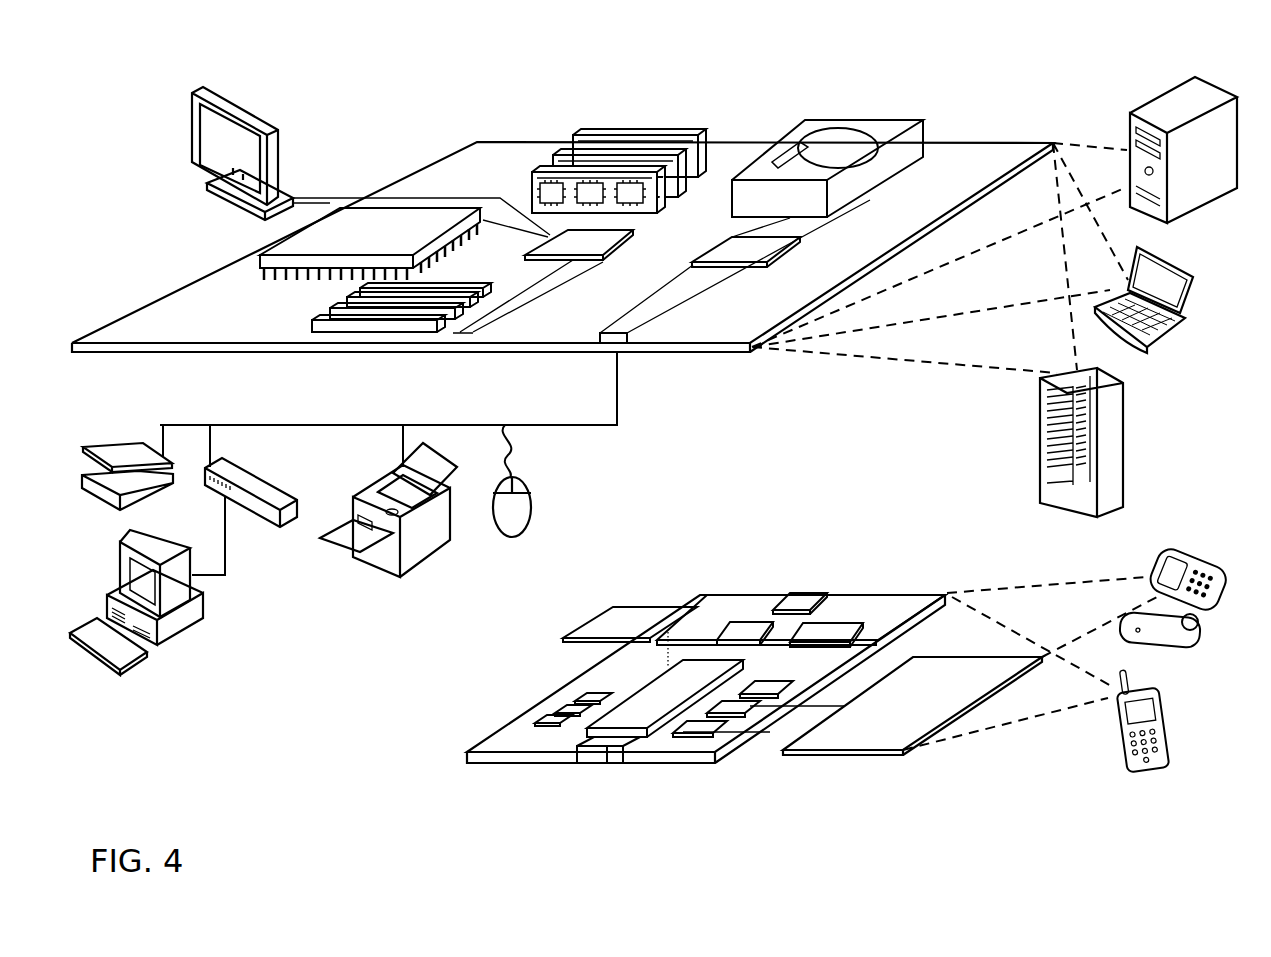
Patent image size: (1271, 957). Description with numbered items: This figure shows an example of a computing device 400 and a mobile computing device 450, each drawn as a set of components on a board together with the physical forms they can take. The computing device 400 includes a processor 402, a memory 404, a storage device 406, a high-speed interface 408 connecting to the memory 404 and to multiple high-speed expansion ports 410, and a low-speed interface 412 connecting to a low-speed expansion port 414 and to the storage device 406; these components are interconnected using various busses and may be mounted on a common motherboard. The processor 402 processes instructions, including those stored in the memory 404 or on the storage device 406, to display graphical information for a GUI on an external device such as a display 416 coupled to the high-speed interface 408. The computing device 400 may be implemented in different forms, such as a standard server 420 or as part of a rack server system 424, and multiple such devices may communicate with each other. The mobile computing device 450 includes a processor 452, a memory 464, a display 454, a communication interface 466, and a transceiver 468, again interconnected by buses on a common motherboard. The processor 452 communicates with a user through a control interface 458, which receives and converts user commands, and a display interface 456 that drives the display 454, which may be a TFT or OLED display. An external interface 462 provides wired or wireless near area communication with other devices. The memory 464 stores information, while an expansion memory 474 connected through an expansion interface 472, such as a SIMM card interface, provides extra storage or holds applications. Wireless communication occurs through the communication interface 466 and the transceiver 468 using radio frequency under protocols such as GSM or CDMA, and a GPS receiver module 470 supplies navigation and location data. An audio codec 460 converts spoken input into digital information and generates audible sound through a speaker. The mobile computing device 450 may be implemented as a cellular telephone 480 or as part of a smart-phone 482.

The computing device 400 is at (385, 112).
The processor 402 is at (268, 259).
The memory 404 is at (583, 133).
The storage device 406 is at (807, 122).
The high-speed interface 408 is at (557, 243).
The high-speed expansion ports 410 is at (337, 314).
The low-speed interface 412 is at (727, 240).
The low-speed expansion port 414 is at (630, 348).
The display 416 is at (190, 94).
The standard server 420 is at (1128, 130).
The rack server system 424 is at (1040, 465).
The mobile computing device 450 is at (446, 762).
The processor 452 is at (639, 722).
The display 454 is at (873, 737).
The display interface 456 is at (705, 726).
The control interface 458 is at (738, 705).
The audio codec 460 is at (765, 688).
The external interface 462 is at (603, 760).
The memory 464 is at (557, 712).
The communication interface 466 is at (757, 630).
The transceiver 468 is at (832, 632).
The GPS receiver module 470 is at (805, 598).
The expansion interface 472 is at (684, 603).
The expansion memory 474 is at (692, 605).
The cellular telephone 480 is at (1175, 553).
The smart-phone 482 is at (1122, 728).